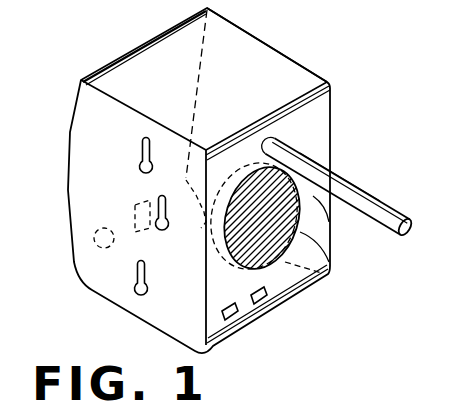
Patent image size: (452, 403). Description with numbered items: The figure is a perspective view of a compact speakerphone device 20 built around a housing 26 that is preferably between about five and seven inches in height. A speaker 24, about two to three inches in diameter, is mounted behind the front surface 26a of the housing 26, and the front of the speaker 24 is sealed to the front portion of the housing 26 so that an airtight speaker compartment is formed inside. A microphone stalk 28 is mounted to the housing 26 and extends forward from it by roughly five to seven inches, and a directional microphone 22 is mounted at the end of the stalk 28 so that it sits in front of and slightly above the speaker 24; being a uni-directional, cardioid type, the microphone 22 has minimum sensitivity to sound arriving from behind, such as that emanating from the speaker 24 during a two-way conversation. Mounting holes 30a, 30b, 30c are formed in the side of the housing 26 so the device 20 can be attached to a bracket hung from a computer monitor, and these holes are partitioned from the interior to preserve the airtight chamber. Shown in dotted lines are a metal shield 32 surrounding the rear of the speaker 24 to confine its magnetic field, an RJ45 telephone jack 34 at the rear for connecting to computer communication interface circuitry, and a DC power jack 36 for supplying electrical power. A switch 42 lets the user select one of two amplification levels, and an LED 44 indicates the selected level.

The speakerphone device 20 is at (241, 84).
The directional microphone 22 is at (410, 216).
The speaker 24 is at (331, 268).
The housing 26 is at (331, 82).
The front surface 26a is at (330, 224).
The microphone stalk 28 is at (352, 190).
The mounting hole 30a is at (139, 168).
The mounting hole 30b is at (169, 224).
The mounting hole 30c is at (147, 292).
The metal shield 32 is at (184, 190).
The RJ45 telephone jack 34 is at (135, 213).
The DC power jack 36 is at (94, 240).
The switch 42 is at (234, 320).
The LED 44 is at (264, 298).